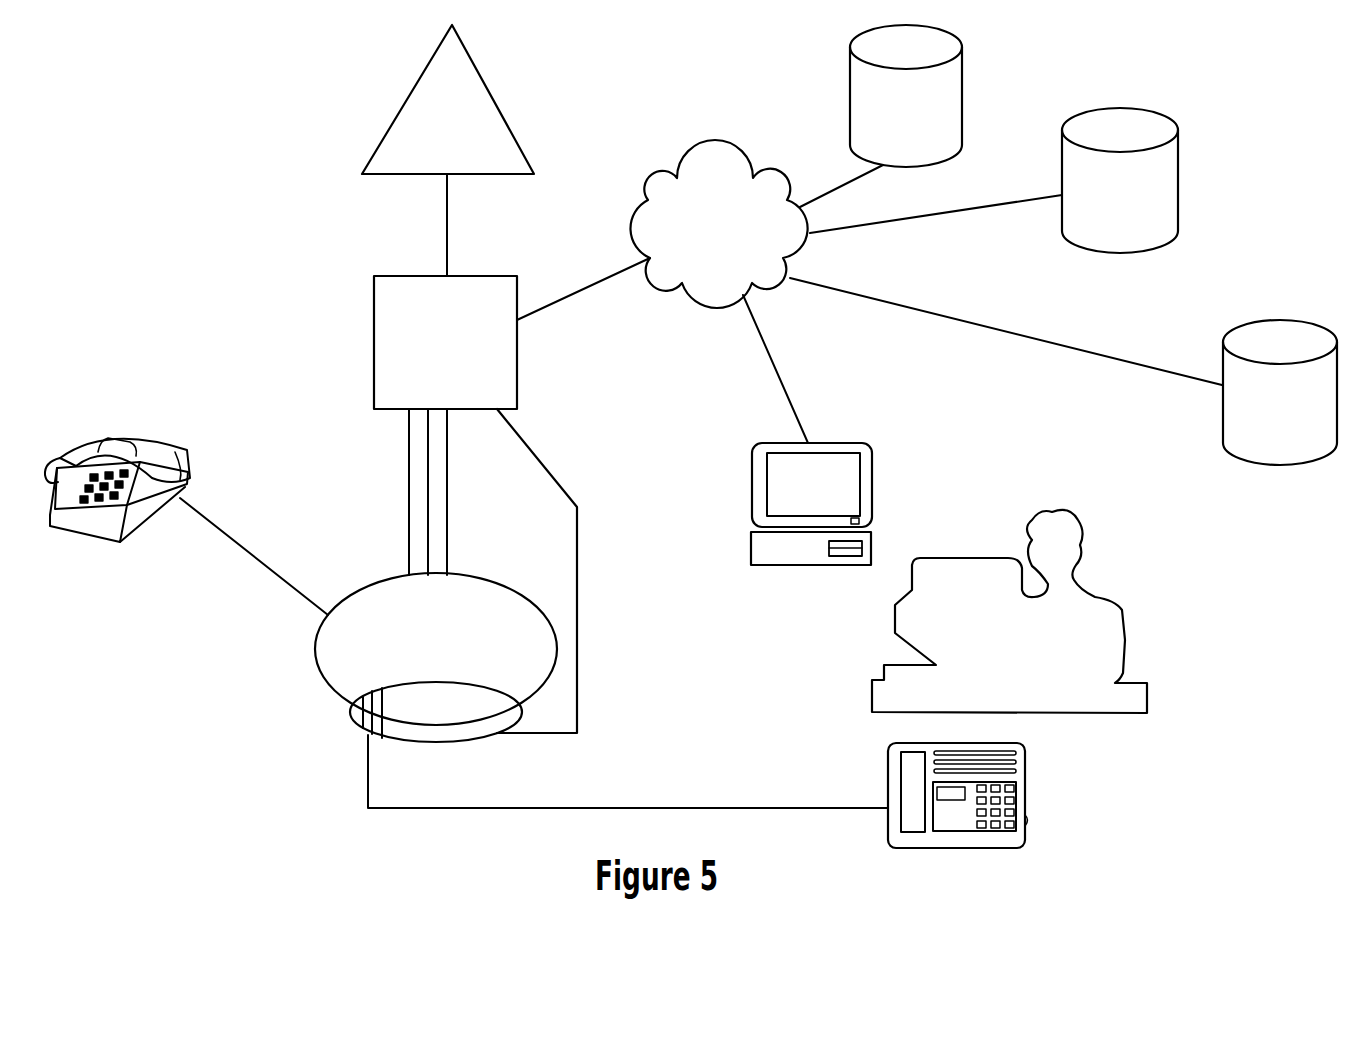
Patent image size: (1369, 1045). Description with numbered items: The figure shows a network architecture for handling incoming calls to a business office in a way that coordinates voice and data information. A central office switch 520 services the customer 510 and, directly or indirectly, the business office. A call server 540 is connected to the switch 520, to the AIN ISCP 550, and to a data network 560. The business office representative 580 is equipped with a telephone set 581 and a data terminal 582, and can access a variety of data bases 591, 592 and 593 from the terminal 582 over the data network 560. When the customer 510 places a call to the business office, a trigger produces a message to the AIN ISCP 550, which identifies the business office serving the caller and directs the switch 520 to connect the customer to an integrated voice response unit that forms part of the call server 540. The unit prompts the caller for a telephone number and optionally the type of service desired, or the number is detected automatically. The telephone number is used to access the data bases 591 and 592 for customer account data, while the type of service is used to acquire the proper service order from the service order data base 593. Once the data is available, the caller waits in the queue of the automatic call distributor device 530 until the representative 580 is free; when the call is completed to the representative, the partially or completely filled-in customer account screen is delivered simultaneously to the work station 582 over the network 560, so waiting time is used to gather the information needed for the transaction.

The customer 510 is at (150, 518).
The switch 520 is at (375, 578).
The automatic call distributor (ACD) device 530 is at (467, 743).
The call server 540 is at (518, 355).
The AIN ISCP 550 is at (488, 87).
The data network 560 is at (685, 158).
The business office representative 580 is at (1150, 700).
The telephone set 581 is at (1025, 802).
The data terminal 582 is at (872, 462).
The customer account data base 591 is at (963, 72).
The service location data base 592 is at (1178, 164).
The service order data base 593 is at (1322, 327).